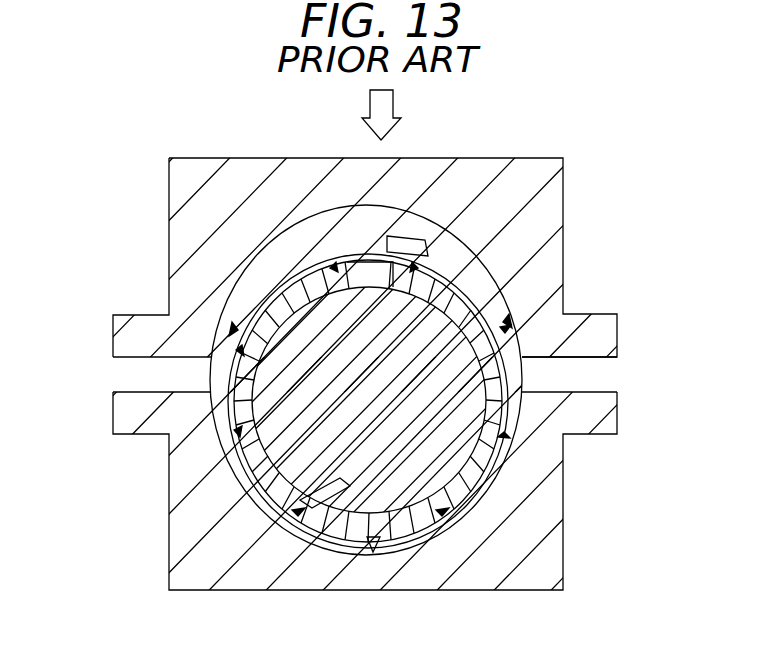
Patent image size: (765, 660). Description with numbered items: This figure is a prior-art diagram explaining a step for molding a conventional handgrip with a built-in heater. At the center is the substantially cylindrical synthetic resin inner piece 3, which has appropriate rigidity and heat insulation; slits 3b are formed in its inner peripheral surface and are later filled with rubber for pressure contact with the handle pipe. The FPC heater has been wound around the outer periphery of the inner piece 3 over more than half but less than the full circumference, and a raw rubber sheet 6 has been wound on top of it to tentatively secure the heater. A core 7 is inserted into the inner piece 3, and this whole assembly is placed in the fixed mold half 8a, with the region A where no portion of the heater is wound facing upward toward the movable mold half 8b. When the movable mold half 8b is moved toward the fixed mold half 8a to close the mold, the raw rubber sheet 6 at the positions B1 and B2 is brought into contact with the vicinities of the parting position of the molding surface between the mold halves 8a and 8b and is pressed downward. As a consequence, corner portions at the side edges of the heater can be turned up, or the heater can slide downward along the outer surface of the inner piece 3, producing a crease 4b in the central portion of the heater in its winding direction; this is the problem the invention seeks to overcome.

The inner piece 3 is at (517, 447).
The slits 3b is at (330, 476).
The crease 4b is at (370, 553).
The raw rubber sheet 6 is at (447, 262).
The core 7 is at (285, 278).
The fixed mold half 8a is at (553, 527).
The movable mold half 8b is at (555, 223).
The region where no portion of the FPC heater is wound A is at (368, 273).
The contact position of raw rubber sheet B1 is at (237, 328).
The contact position of raw rubber sheet B2 is at (505, 320).